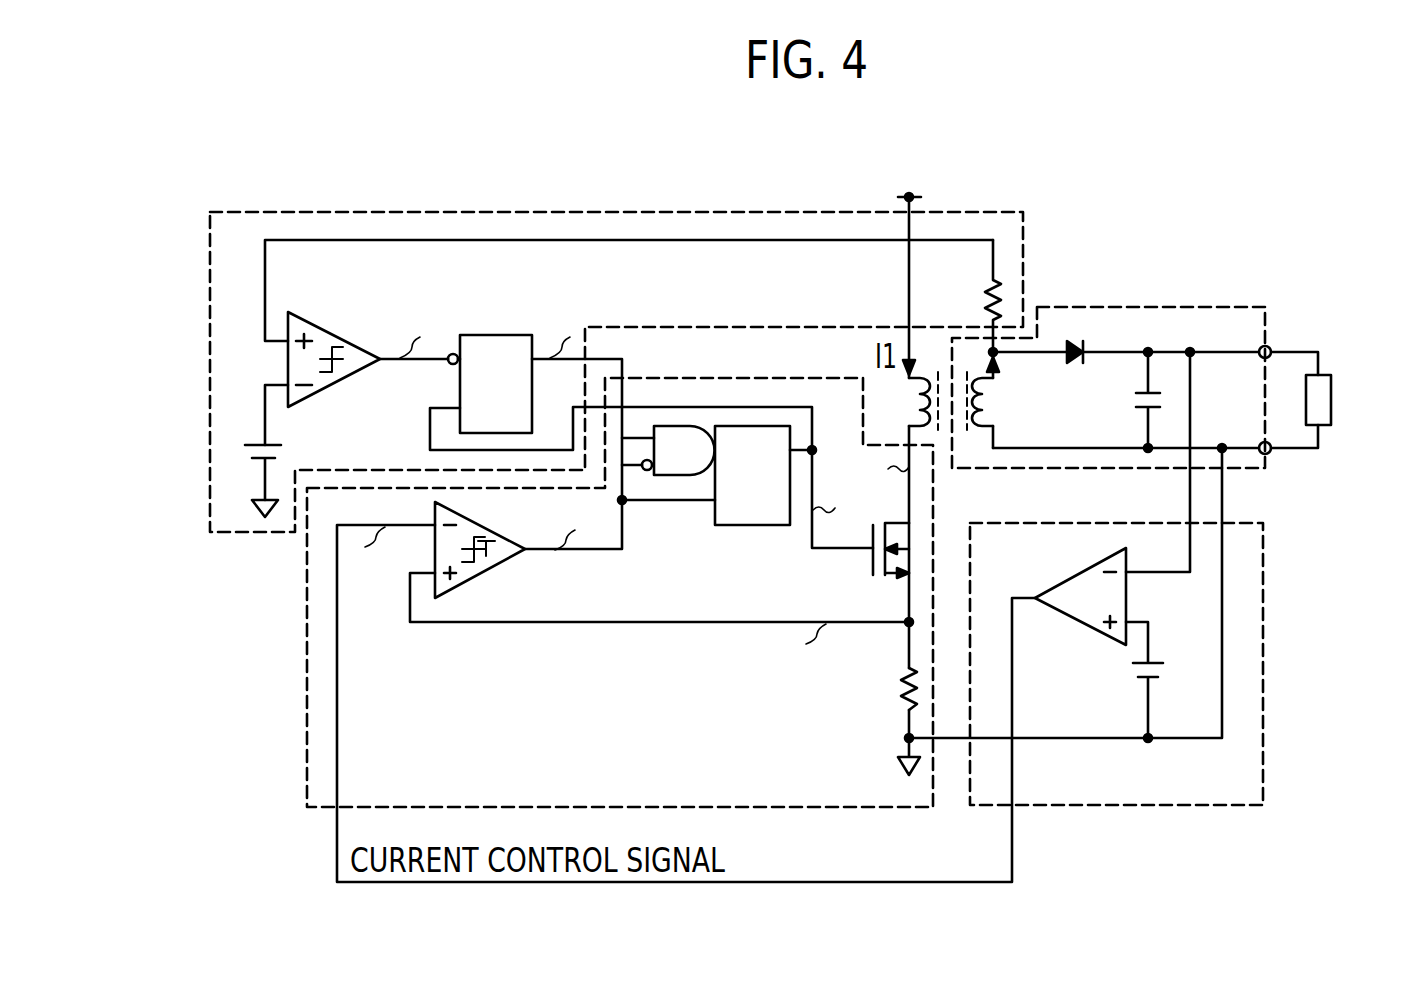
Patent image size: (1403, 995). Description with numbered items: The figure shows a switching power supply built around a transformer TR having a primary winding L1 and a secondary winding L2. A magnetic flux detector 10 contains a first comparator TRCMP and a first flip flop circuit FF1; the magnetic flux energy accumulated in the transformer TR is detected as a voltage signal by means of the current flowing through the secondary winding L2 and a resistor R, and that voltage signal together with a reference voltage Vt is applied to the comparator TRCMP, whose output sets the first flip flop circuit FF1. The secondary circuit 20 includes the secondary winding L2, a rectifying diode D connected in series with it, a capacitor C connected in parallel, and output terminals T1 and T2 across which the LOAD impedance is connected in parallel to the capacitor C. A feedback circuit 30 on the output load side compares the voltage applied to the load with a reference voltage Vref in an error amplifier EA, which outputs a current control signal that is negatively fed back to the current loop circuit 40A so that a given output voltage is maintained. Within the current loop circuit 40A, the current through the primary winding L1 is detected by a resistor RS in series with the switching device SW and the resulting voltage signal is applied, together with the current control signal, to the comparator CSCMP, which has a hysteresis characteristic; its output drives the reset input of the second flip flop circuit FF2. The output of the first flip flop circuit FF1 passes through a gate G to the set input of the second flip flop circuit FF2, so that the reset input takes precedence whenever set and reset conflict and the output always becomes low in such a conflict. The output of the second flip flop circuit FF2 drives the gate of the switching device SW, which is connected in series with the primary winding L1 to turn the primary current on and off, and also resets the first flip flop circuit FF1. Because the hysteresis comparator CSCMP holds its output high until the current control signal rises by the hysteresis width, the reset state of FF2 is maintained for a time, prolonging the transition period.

The magnetic flux detector 10 is at (670, 208).
The secondary circuit 20 is at (1053, 304).
The feedback circuit 30 is at (1050, 808).
The current loop circuit 40A is at (770, 808).
The first comparator TRCMP is at (325, 324).
The reference voltage Vt is at (281, 473).
The first flip flop circuit FF1 is at (498, 334).
The second flip flop circuit FF2 is at (750, 527).
The gate G is at (684, 450).
The comparator with hysteresis characteristic CSCMP is at (520, 584).
The switching device SW is at (881, 569).
The resistor RS is at (891, 689).
The transformer TR is at (971, 411).
The primary winding L1 is at (901, 402).
The secondary winding L2 is at (1038, 425).
The resistor R is at (984, 296).
The rectifying diode D is at (1075, 371).
The capacitor C is at (1139, 400).
The output terminal T1 is at (1249, 335).
The output terminal T2 is at (1249, 431).
The load LOAD is at (1335, 400).
The error amplifier EA is at (1076, 621).
The reference voltage Vref is at (1170, 680).